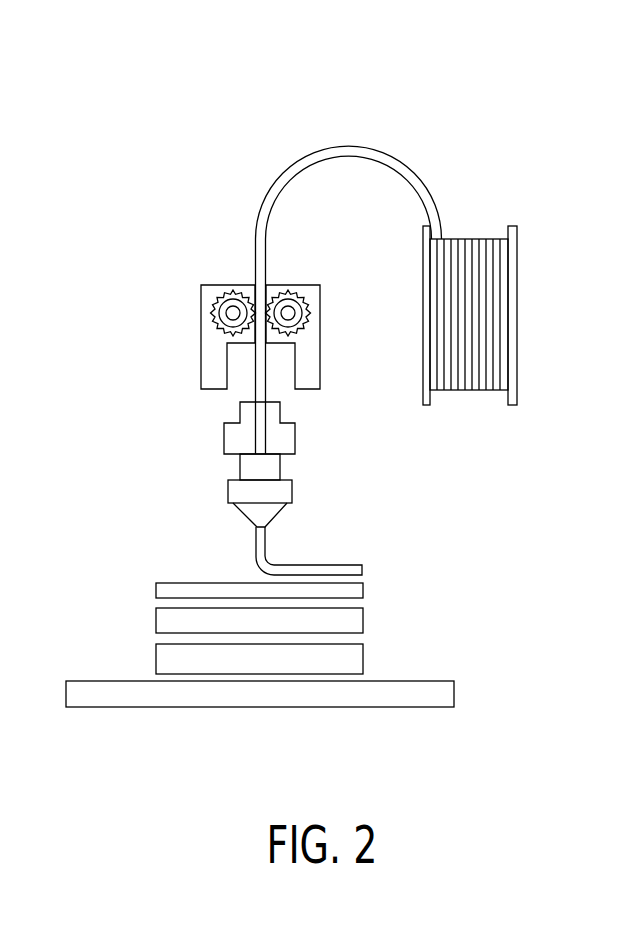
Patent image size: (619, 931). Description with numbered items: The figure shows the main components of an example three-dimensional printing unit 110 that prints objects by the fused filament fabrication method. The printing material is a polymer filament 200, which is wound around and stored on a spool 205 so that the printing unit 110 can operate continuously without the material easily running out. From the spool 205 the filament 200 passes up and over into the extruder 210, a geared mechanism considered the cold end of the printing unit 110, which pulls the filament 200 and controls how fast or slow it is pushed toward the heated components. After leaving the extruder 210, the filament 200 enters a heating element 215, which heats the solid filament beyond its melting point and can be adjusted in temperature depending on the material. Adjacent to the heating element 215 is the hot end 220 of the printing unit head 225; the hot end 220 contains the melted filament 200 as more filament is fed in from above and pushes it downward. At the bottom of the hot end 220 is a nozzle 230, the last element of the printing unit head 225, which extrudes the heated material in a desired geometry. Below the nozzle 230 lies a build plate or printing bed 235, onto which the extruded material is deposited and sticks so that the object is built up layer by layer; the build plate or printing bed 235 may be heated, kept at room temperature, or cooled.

The printing unit 110 is at (125, 117).
The filament 200 is at (350, 146).
The spool 205 is at (517, 327).
The extruder 210 is at (201, 315).
The heating element 215 is at (224, 433).
The hot end 220 is at (228, 487).
The printing unit head 225 is at (308, 400).
The nozzle 230 is at (253, 528).
The build plate or printing bed 235 is at (383, 707).